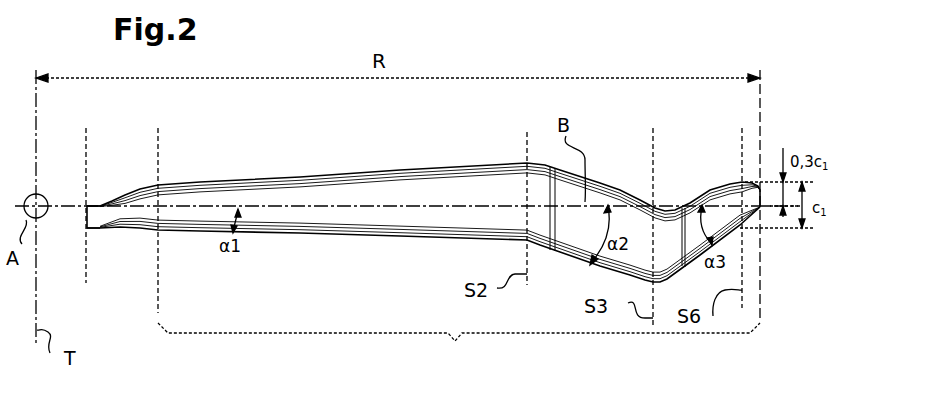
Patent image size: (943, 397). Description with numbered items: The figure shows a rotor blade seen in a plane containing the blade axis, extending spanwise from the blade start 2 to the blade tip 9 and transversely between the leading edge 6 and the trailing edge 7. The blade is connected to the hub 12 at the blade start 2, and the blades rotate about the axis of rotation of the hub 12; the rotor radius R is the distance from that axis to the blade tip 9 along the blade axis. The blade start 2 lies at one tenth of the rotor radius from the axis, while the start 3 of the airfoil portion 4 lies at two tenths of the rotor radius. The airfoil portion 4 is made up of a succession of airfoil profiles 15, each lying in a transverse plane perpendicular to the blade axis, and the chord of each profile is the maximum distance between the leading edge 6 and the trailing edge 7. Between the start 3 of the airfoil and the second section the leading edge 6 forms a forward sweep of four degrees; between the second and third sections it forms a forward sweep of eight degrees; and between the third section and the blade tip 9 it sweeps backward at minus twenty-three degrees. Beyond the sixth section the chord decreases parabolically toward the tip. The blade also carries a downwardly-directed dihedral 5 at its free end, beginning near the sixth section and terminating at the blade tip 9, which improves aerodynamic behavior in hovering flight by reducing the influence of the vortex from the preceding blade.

The blade start 2 is at (88, 216).
The start of the airfoil 3 is at (158, 272).
The airfoil portion 4 is at (459, 349).
The dihedral 5 is at (690, 41).
The leading edge 6 is at (303, 236).
The trailing edge 7 is at (203, 183).
The blade tip 9 is at (763, 192).
The hub 12 is at (40, 194).
The airfoil profiles 15 is at (730, 0).